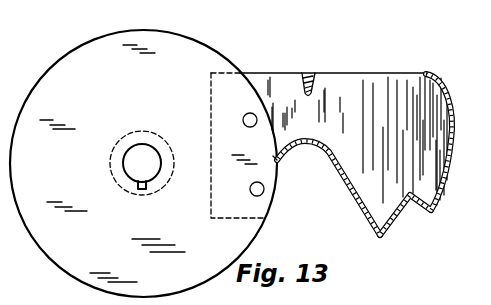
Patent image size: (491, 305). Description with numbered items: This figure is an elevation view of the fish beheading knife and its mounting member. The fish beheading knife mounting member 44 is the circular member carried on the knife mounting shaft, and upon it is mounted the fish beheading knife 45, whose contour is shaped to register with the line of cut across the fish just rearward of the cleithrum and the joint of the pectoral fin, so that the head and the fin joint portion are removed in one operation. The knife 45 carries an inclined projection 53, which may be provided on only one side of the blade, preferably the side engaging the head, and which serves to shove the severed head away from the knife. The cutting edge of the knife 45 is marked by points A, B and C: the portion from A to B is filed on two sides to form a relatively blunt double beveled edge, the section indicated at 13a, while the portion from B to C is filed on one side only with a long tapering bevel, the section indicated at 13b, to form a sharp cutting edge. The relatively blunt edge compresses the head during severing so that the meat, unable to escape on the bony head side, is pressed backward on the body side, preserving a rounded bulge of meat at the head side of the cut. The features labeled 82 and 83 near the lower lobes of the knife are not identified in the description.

The fish beheading knife mounting member 44 is at (212, 61).
The fish beheading knife 45 is at (380, 80).
The inclined projection 53 is at (315, 74).
The cutting lobe 82 is at (377, 243).
The cutting lobe tip 83 is at (433, 214).
The double beveled edge 13a is at (382, 215).
The long tapering bevel edge 13b is at (476, 128).
The cutting edge point A is at (282, 167).
The cutting edge point B is at (447, 142).
The cutting edge point C is at (433, 65).